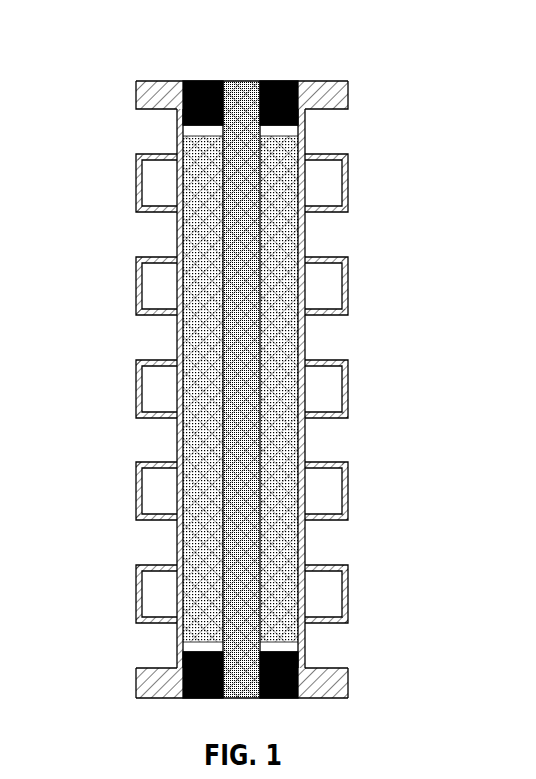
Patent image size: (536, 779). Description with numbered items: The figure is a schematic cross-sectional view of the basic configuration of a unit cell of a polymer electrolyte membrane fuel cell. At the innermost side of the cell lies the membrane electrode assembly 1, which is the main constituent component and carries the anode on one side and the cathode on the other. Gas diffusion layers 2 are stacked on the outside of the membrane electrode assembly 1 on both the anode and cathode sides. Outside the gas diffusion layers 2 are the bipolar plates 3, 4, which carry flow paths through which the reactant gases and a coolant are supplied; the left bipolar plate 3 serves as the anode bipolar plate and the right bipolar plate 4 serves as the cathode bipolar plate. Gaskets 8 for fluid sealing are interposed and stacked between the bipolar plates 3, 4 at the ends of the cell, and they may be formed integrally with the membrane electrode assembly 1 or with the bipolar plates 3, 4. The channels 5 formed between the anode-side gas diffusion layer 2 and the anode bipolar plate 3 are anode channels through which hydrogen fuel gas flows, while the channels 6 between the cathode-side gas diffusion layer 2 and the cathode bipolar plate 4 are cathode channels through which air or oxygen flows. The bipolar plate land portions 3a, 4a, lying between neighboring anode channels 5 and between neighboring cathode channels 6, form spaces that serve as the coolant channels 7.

The membrane electrode assembly 1 is at (248, 339).
The gas diffusion layers 2 is at (207, 455).
The anode bipolar plate 3 is at (205, 389).
The bipolar plate land portion 3a is at (177, 229).
The cathode bipolar plate 4 is at (363, 389).
The bipolar plate land portion 4a is at (305, 222).
The anode channels 5 is at (153, 287).
The cathode channels 6 is at (324, 493).
The coolant channels 7 is at (330, 240).
The gaskets 8 is at (275, 80).